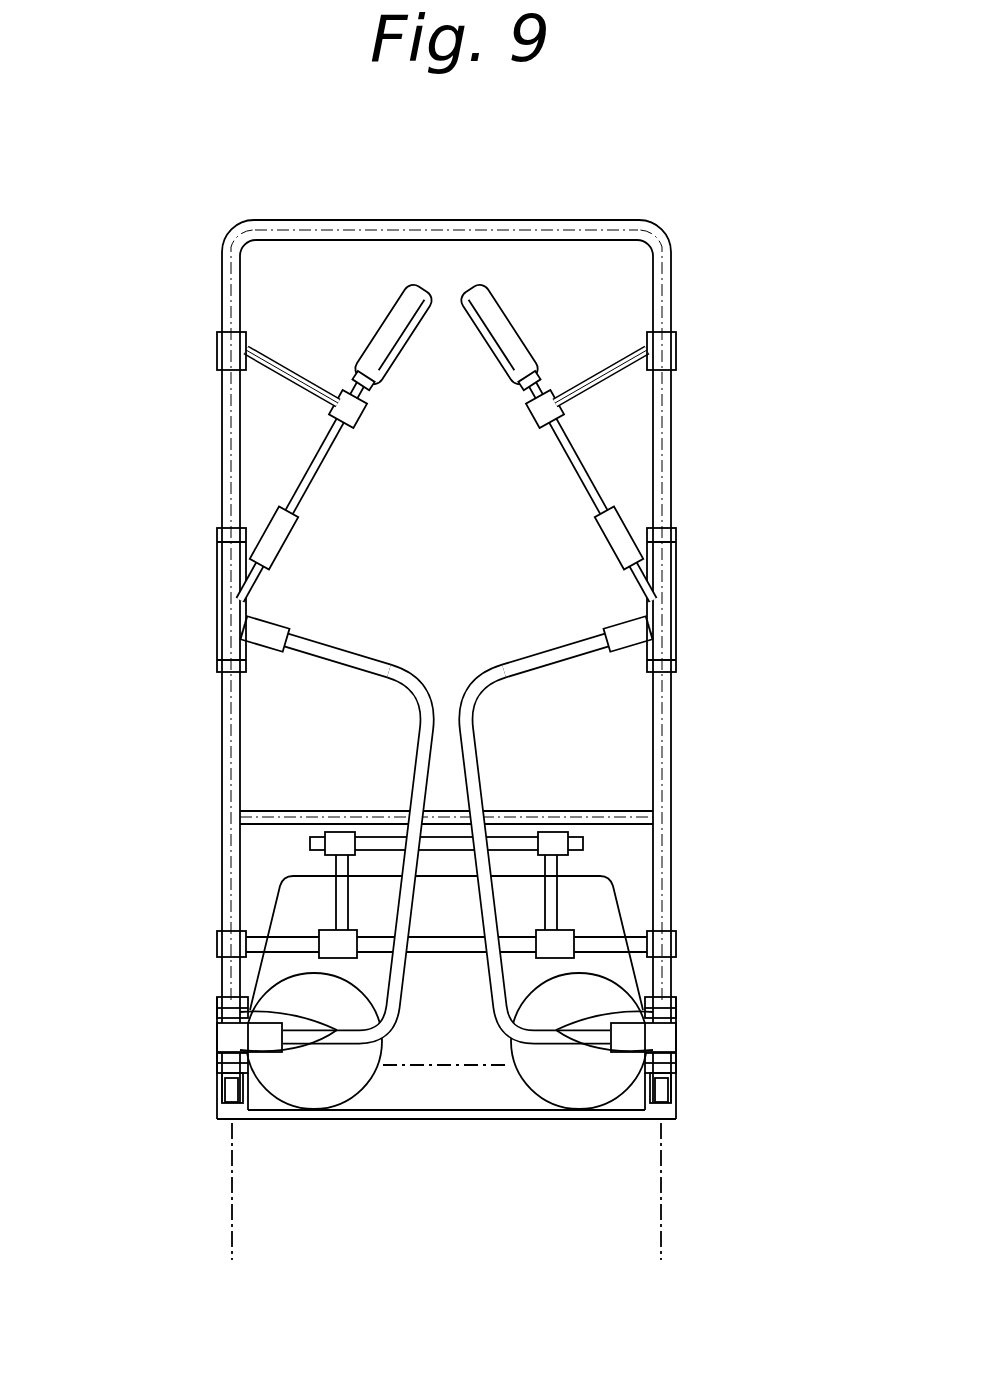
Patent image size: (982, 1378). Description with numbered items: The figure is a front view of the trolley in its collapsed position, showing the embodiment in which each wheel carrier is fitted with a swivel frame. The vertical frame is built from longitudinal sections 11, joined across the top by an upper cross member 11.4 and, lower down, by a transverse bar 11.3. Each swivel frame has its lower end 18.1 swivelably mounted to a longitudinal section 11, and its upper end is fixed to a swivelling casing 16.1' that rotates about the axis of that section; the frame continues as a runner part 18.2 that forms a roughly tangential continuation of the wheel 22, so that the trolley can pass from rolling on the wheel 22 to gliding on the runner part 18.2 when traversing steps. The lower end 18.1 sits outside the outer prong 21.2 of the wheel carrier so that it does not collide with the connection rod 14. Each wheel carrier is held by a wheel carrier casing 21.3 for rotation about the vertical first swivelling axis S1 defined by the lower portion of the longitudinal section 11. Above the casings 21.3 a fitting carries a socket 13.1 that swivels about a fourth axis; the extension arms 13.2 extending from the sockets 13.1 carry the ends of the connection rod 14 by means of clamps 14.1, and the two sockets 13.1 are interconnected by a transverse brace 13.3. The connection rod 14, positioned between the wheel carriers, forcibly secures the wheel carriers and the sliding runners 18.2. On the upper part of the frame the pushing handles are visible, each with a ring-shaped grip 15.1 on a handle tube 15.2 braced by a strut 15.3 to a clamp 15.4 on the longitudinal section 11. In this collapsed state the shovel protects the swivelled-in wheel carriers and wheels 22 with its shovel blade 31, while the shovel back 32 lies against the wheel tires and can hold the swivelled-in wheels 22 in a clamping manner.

The longitudinal section 11 is at (222, 683).
The cross bar of frame 11.3 is at (573, 818).
The top bar of frame 11.4 is at (455, 219).
The socket 13.1 is at (218, 942).
The extension arm 13.2 is at (337, 892).
The transverse brace 13.3 is at (521, 937).
The connection rod 14 is at (385, 838).
The clamp on bar 14.1 is at (322, 843).
The handle 15.1 is at (388, 323).
The handle tube 15.2 is at (487, 356).
The strut 15.3 is at (290, 385).
The clamp on frame 15.4 is at (218, 350).
The swivelling casing 16.1' is at (446, 600).
The lower end 18.1 is at (303, 1037).
The runner part 18.2 is at (463, 719).
The outer prong 21.2 is at (222, 1080).
The wheel carrier casing 21.3 is at (240, 1050).
The wheel 22 is at (468, 1066).
The shovel blade 31 is at (462, 1004).
The shovel back 32 is at (447, 1122).
The first swivelling axis S1 is at (232, 1228).